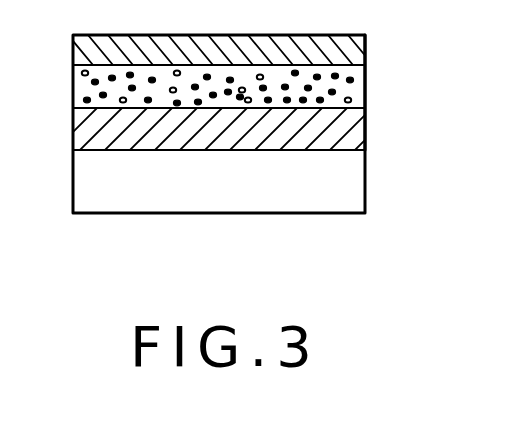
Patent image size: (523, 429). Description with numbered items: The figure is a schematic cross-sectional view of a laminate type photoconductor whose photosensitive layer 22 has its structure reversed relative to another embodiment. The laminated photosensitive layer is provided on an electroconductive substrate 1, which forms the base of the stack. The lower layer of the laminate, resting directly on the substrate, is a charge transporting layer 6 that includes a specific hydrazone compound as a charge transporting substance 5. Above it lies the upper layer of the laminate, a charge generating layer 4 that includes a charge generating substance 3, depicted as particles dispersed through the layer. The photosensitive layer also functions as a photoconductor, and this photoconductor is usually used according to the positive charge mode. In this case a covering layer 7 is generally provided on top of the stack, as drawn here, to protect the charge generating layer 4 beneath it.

The electroconductive substrate 1 is at (353, 190).
The charge generating substance 3 is at (90, 82).
The charge generating layer 4 is at (353, 90).
The charge transporting substance 5 is at (88, 130).
The charge transporting layer 6 is at (353, 135).
The covering layer 7 is at (353, 53).
The photosensitive layer 22 is at (448, 40).